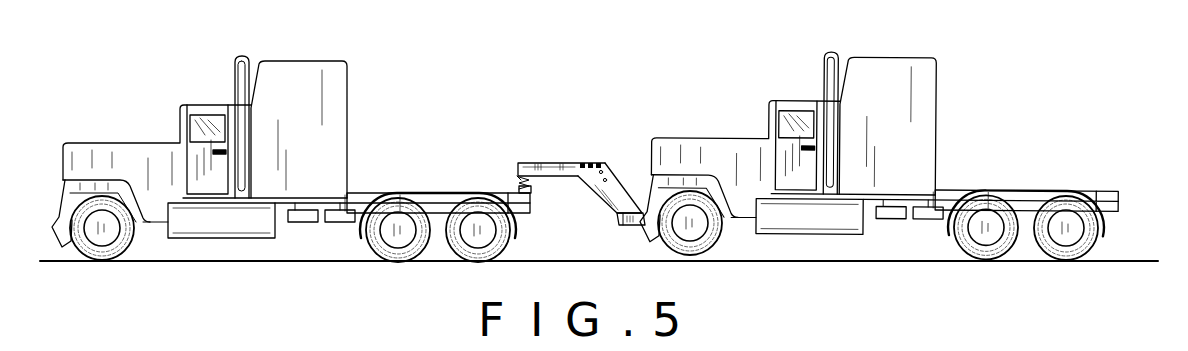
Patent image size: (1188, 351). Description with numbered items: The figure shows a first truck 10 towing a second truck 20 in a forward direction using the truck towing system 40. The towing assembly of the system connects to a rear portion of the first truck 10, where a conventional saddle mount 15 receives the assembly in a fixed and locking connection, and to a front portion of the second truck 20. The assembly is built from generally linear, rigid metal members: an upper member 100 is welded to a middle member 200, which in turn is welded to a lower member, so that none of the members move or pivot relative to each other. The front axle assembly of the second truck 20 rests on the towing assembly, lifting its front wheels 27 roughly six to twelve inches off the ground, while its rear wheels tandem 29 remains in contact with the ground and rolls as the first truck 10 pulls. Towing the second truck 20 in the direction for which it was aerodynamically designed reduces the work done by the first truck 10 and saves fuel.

The first truck 10 is at (348, 93).
The second truck 20 is at (935, 60).
The front wheels 27 is at (710, 236).
The rear wheels tandem 29 is at (1088, 238).
The truck towing system 40 is at (565, 158).
The upper member 100 is at (541, 163).
The middle member 200 is at (601, 198).
The saddle mount 15 is at (531, 187).